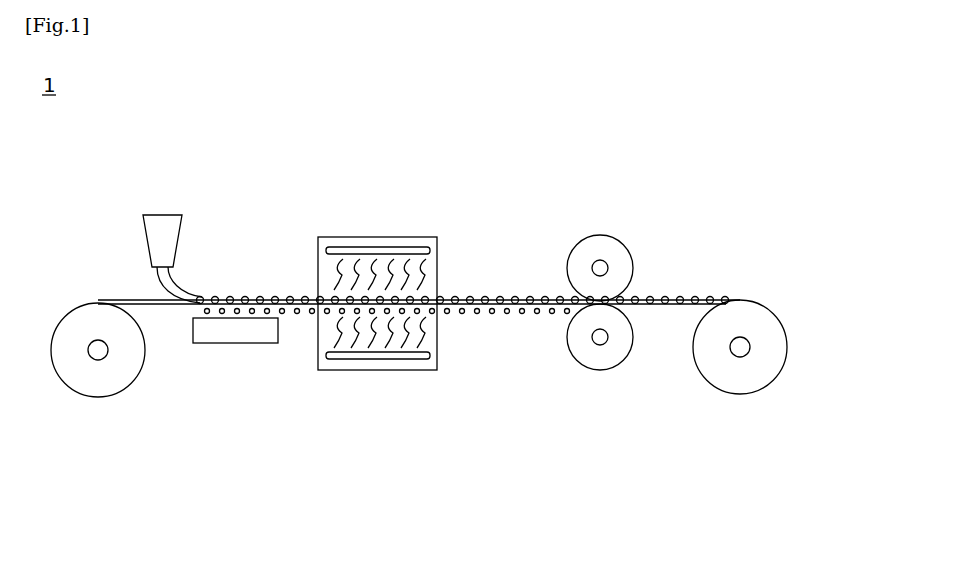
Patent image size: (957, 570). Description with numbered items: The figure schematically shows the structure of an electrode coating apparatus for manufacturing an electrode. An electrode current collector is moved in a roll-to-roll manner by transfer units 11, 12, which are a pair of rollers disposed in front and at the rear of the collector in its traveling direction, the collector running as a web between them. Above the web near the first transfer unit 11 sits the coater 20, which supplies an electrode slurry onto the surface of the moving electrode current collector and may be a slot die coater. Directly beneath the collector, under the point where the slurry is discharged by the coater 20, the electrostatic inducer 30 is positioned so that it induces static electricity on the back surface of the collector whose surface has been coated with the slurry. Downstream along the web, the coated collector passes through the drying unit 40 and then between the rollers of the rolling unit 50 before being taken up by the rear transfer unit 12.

The transfer unit 11 is at (97, 373).
The transfer unit 12 is at (770, 346).
The coater 20 is at (160, 232).
The electrostatic inducer 30 is at (226, 329).
The drying unit 40 is at (382, 237).
The rolling unit 50 is at (603, 250).